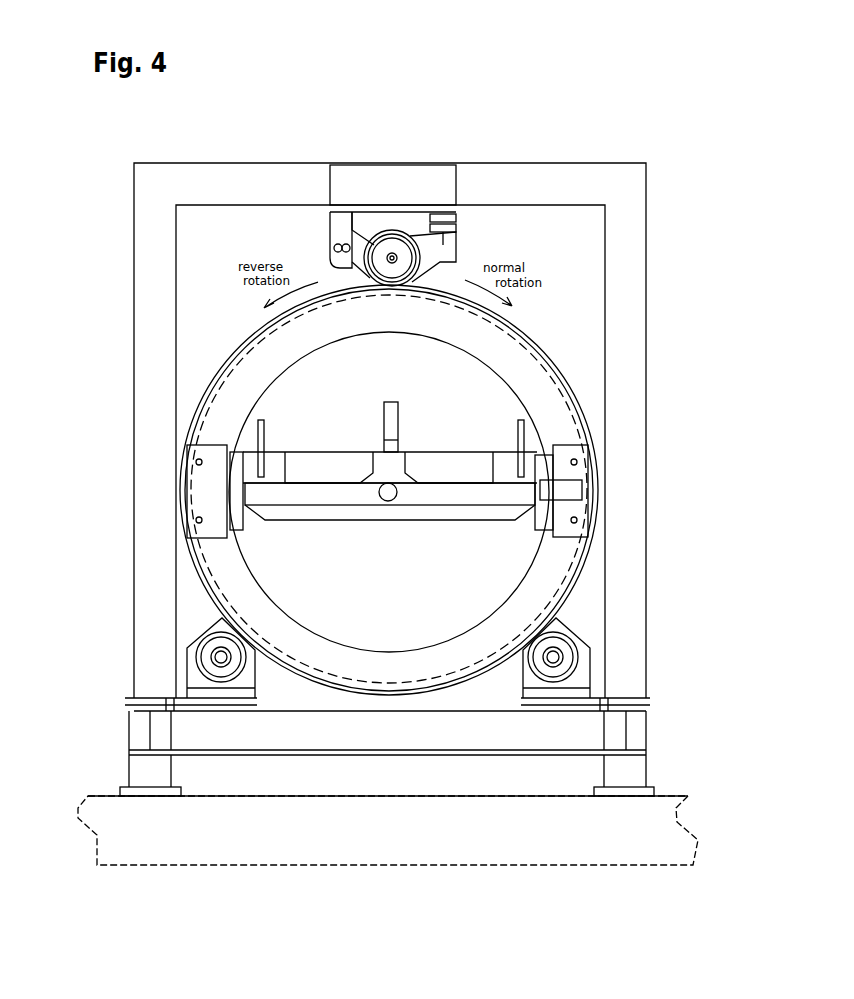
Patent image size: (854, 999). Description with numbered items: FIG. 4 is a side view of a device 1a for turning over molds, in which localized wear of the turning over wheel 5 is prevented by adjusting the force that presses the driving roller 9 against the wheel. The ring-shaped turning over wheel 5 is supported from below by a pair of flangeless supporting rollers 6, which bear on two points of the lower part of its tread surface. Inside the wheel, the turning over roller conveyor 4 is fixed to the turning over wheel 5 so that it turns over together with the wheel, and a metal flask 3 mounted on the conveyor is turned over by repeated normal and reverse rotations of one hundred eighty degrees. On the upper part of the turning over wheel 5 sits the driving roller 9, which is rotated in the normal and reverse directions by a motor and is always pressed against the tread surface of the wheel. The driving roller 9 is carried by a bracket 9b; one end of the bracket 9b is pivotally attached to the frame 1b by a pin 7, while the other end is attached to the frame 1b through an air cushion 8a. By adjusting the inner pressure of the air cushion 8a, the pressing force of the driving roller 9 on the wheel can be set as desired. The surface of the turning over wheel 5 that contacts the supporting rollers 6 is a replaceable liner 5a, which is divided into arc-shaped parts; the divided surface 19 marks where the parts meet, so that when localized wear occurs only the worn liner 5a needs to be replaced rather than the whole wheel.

The device for turning over the molds 1a is at (548, 134).
The frame 1b is at (638, 566).
The metal flask 3 is at (423, 452).
The turning over roller conveyor 4 is at (205, 452).
The turning over wheel 5 is at (520, 334).
The liner 5a is at (548, 348).
The supporting roller 6 is at (190, 666).
The pin 7 is at (330, 258).
The air cushion 8a is at (452, 222).
The driving roller 9 is at (398, 256).
The bracket 9b is at (444, 268).
The divided surface 19 is at (314, 682).